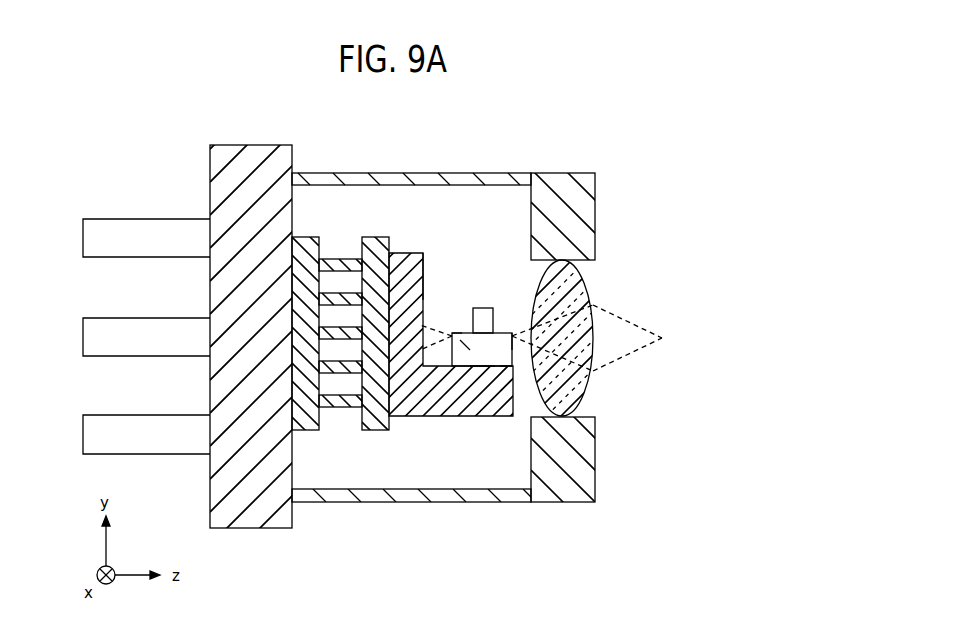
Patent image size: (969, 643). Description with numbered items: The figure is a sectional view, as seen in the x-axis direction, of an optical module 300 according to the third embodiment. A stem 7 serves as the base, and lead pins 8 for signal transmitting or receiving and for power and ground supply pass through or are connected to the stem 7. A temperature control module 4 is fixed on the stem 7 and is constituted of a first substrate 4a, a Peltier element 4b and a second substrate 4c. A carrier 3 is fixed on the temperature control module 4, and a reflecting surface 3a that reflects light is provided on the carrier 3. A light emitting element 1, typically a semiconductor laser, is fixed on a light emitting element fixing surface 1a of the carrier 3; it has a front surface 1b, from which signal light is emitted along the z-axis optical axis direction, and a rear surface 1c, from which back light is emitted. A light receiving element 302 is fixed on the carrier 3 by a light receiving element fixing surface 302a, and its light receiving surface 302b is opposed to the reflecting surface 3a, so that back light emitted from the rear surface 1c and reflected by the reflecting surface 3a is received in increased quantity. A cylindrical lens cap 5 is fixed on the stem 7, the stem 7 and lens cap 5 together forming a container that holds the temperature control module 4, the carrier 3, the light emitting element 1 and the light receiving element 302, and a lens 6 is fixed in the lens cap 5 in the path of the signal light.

The optical module 300 is at (224, 107).
The light emitting element 1 is at (479, 343).
The light emitting element fixing surface 1a is at (512, 368).
The front surface 1b is at (514, 345).
The rear surface 1c is at (448, 333).
The carrier 3 is at (400, 417).
The reflecting surface 3a is at (423, 253).
The temperature control module 4 is at (340, 340).
The first substrate 4a is at (313, 246).
The Peltier element 4b is at (362, 236).
The second substrate 4c is at (378, 246).
The lens cap 5 is at (570, 180).
The lens 6 is at (581, 400).
The stem 7 is at (228, 530).
The lead pins 8 is at (105, 232).
The light receiving element 302 is at (483, 313).
The light receiving element fixing surface 302a is at (482, 368).
The light receiving surface 302b is at (465, 350).